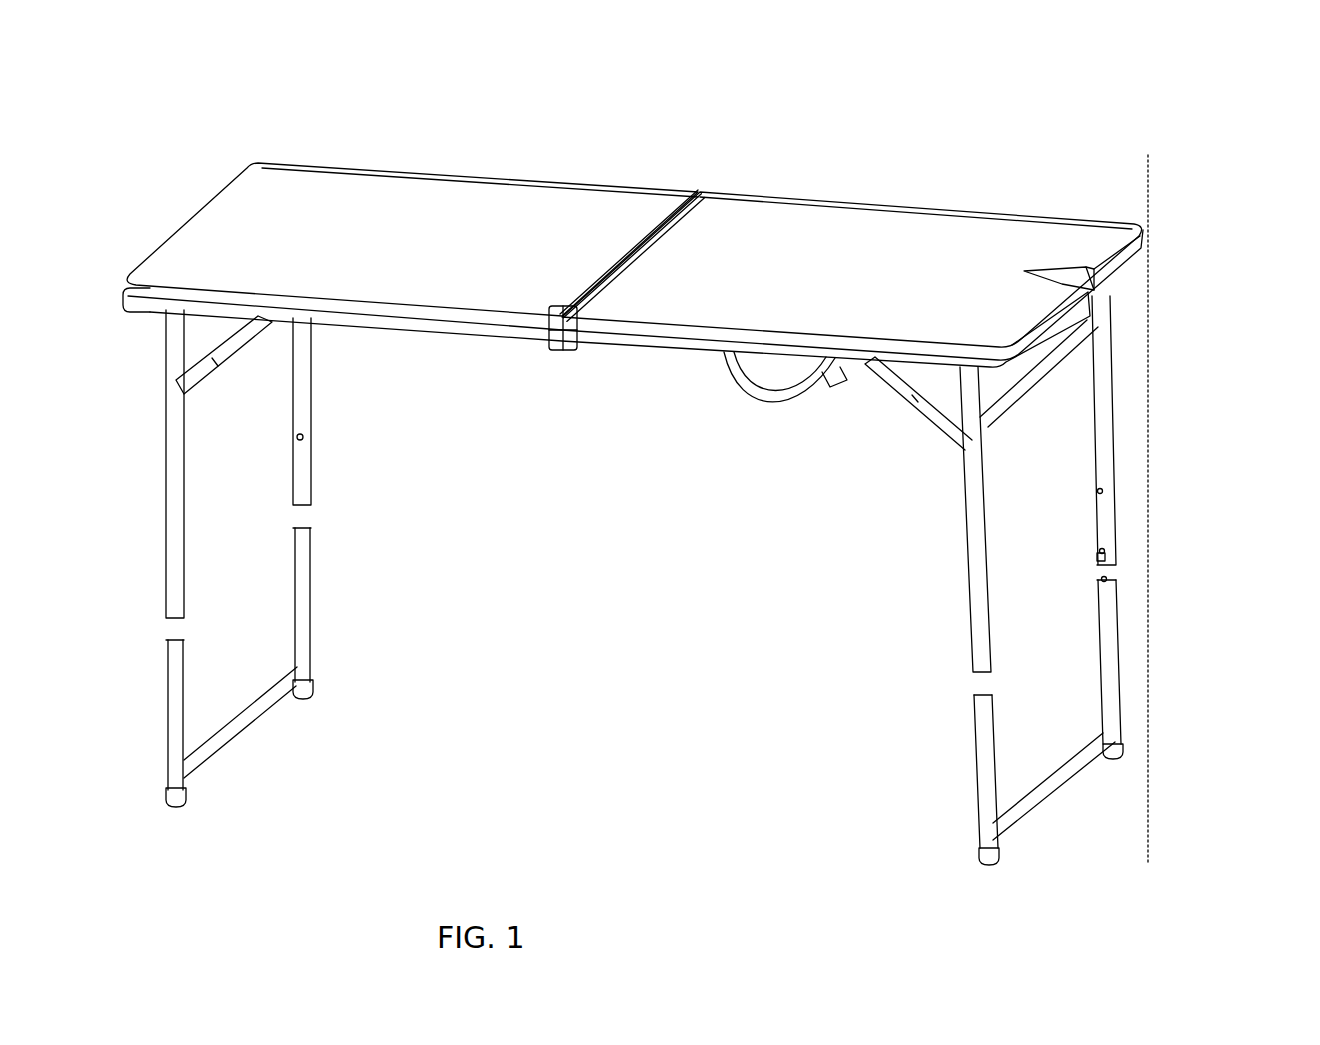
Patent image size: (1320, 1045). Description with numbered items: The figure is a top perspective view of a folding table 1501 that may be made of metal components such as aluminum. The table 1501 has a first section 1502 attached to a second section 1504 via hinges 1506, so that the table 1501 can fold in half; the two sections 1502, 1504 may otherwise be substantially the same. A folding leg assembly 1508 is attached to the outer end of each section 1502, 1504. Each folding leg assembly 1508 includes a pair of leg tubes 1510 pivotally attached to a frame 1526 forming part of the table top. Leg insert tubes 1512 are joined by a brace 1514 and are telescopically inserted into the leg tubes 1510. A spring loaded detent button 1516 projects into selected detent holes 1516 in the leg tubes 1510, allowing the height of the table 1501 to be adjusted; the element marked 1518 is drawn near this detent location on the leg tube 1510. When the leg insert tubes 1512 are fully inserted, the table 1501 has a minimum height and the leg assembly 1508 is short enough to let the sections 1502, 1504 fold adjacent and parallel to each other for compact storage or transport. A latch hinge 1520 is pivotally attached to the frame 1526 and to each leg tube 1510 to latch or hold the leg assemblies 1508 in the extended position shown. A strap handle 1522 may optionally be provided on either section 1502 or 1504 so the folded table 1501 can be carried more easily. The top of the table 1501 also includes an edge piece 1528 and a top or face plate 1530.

The table 1501 is at (569, 148).
The first section 1502 is at (345, 190).
The second section 1504 is at (826, 216).
The hinges 1506 is at (563, 315).
The folding leg assembly 1508 is at (958, 565).
The leg tubes 1510 is at (978, 643).
The leg insert tubes 1512 is at (980, 768).
The brace 1514 is at (1047, 778).
The detent button and detent holes 1516 is at (1100, 553).
The locking pin 1518 is at (1105, 580).
The latch hinge 1520 is at (892, 383).
The strap handle 1522 is at (740, 352).
The frame 1526 is at (183, 298).
The edge piece 1528 is at (1145, 230).
The top plate 1530 is at (958, 235).